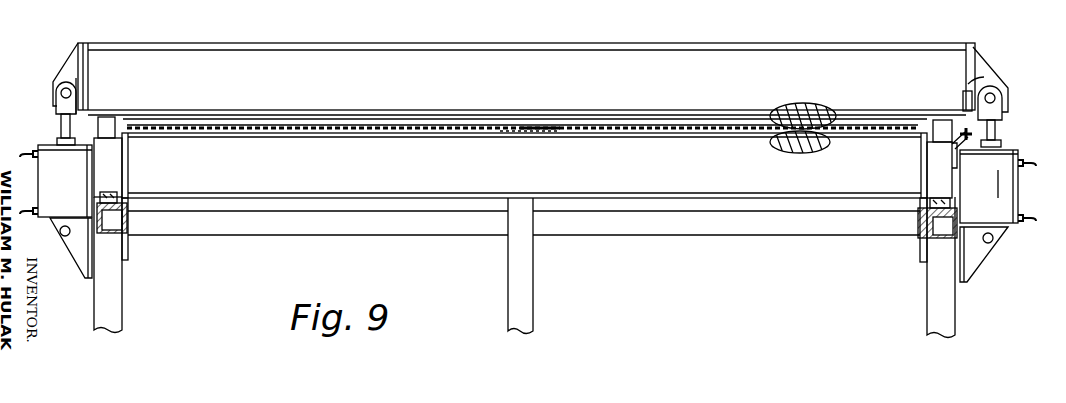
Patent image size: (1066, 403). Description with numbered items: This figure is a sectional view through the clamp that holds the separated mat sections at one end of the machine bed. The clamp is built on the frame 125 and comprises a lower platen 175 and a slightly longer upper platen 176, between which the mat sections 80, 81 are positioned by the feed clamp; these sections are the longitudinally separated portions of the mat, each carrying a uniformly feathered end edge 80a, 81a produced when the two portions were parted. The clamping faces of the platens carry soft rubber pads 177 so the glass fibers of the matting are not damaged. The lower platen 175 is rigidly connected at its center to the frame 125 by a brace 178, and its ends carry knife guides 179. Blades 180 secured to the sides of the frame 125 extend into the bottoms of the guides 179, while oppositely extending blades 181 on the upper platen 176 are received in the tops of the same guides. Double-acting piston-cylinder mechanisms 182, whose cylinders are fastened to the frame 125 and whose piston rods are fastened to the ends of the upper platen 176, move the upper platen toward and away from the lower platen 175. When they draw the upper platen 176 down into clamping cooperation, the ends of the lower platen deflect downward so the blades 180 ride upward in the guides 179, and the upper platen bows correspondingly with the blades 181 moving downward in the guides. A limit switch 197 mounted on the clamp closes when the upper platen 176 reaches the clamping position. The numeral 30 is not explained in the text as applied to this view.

The side frame assembly 30 is at (56, 60).
The upper platen 176 is at (203, 55).
The limit switch 197 is at (973, 97).
The double-acting piston-cylinder mechanism 182 is at (43, 177).
The blade 181 is at (107, 125).
The knife guide 179 is at (113, 167).
The lower platen 175 is at (254, 182).
The frame 125 is at (497, 246).
The brace 178 is at (523, 290).
The blade 180 is at (128, 205).
The first longitudinal portion of the mat 80 is at (318, 128).
The feathered end edge 80a is at (524, 132).
The second longitudinal portion of the mat 81 is at (645, 128).
The feathered end edge 81a is at (539, 130).
The soft rubber pad 177 is at (838, 112).